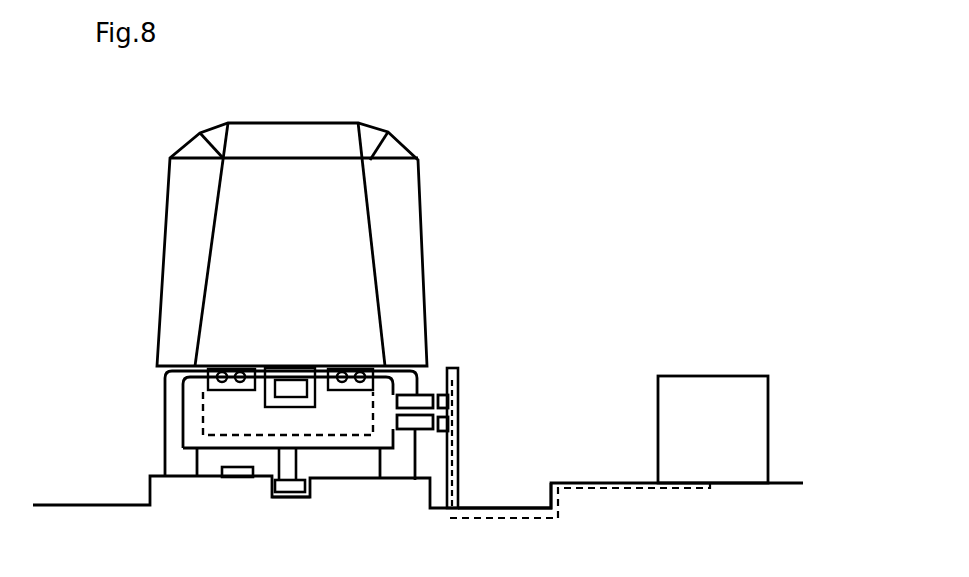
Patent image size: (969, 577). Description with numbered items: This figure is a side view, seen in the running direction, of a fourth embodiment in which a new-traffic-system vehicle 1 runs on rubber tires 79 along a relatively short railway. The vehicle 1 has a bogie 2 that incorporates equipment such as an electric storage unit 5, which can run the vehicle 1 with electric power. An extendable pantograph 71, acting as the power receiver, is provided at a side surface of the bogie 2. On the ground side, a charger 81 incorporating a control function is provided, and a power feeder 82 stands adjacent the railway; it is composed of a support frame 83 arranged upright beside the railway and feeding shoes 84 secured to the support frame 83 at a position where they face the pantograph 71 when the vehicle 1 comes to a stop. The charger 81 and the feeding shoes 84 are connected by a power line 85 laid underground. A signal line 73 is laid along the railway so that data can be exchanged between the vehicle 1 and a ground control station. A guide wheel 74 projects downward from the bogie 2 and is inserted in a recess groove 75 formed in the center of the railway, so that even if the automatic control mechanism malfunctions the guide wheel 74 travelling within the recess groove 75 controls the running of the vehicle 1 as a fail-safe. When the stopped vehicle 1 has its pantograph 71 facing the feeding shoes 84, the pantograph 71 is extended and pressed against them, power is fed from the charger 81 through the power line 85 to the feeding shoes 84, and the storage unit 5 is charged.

The vehicle 1 is at (418, 158).
The bogie 2 is at (180, 395).
The electric storage unit 5 is at (243, 430).
The pantograph 71 is at (423, 394).
The signal line 73 is at (243, 478).
The guide wheel 74 is at (292, 498).
The recess groove 75 is at (310, 487).
The rubber tires 79 is at (163, 440).
The charger 81 is at (716, 376).
The power feeder 82 is at (465, 488).
The support frame 83 is at (460, 440).
The feeding shoes 84 is at (443, 372).
The power line 85 is at (560, 518).